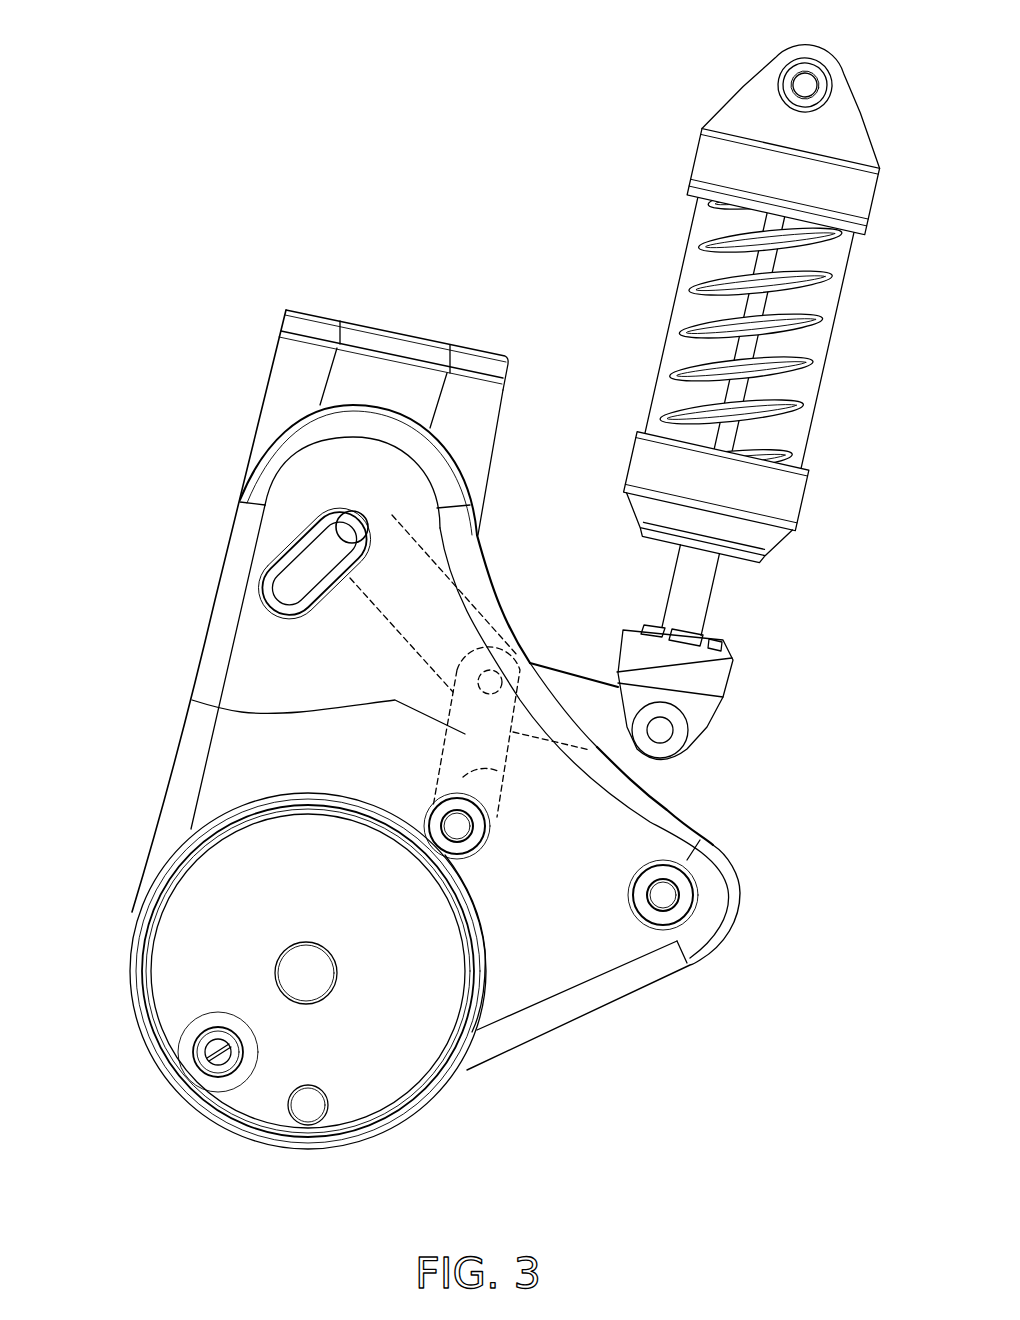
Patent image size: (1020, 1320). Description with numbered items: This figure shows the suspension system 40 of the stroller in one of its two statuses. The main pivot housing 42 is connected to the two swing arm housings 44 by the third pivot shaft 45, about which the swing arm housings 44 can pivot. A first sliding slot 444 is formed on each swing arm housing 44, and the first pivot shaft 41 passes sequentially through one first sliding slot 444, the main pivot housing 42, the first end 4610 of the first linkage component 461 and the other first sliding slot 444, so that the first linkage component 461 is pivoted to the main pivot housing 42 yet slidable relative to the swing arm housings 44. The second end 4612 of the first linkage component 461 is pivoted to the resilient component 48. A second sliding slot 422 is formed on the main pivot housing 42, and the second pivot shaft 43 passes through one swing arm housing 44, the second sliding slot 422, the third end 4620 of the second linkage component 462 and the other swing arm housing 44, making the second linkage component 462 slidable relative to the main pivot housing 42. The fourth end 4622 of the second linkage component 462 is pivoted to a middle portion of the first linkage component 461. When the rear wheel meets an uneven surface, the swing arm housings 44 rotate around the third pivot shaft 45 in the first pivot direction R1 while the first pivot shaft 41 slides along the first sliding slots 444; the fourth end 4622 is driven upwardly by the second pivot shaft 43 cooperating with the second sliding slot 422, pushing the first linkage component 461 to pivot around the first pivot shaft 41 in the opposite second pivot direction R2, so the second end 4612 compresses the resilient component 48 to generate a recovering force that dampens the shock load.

The suspension system 40 is at (487, 587).
The first pivot shaft 41 is at (330, 500).
The main pivot housing 42 is at (477, 365).
The second pivot shaft 43 is at (483, 843).
The swing arm housings 44 is at (182, 921).
The third pivot shaft 45 is at (668, 893).
The resilient component 48 is at (817, 350).
The first linkage component 461 is at (437, 585).
The second linkage component 462 is at (192, 700).
The first end 4610 is at (353, 527).
The second end 4612 is at (660, 762).
The third end 4620 is at (457, 826).
The fourth end 4622 is at (512, 652).
The second sliding slot 422 is at (508, 793).
The first sliding slot 444 is at (303, 583).
The first pivot direction R1 is at (347, 200).
The second pivot direction R2 is at (585, 272).